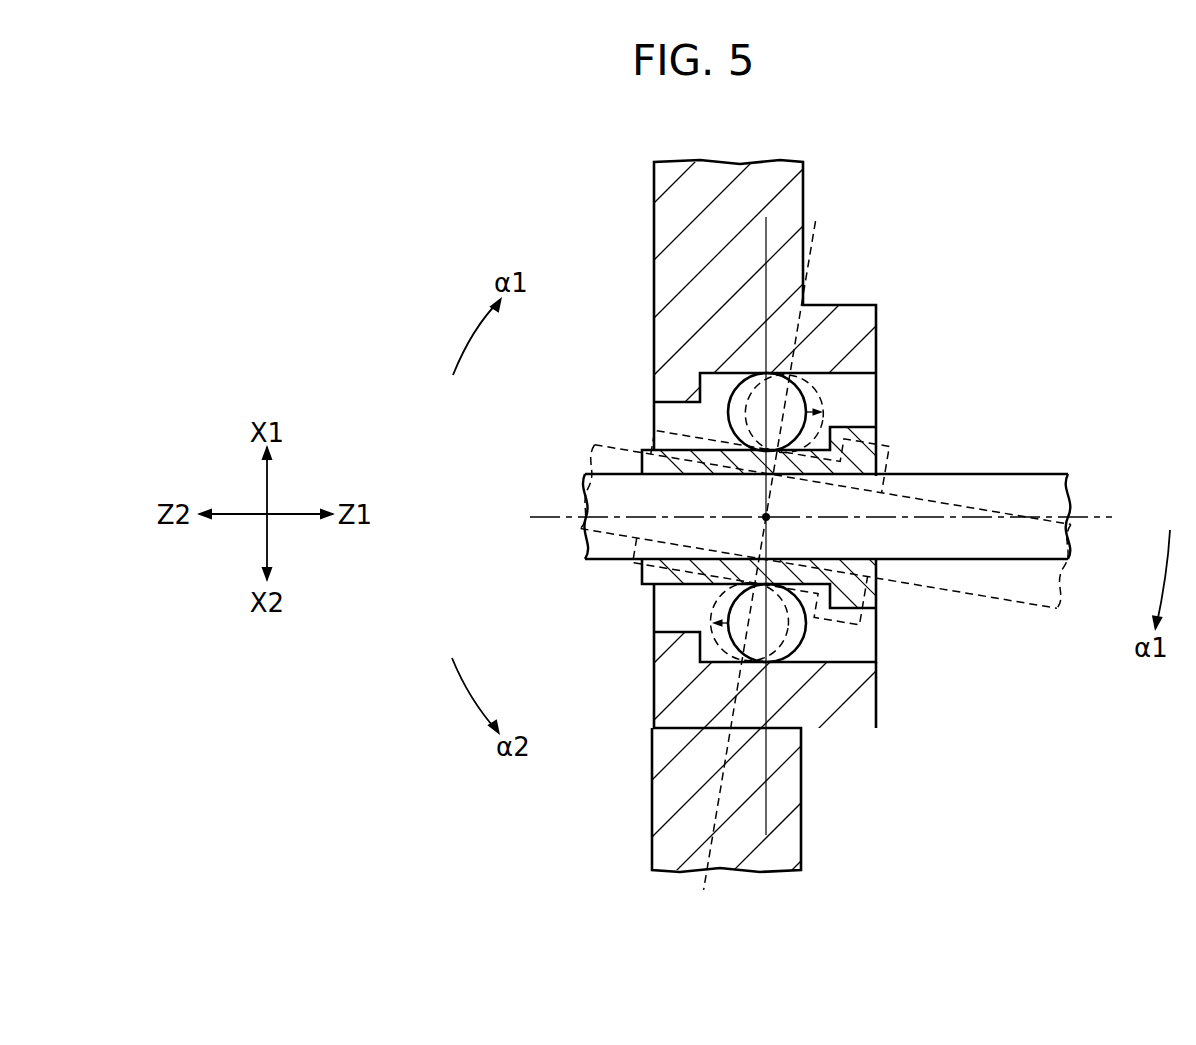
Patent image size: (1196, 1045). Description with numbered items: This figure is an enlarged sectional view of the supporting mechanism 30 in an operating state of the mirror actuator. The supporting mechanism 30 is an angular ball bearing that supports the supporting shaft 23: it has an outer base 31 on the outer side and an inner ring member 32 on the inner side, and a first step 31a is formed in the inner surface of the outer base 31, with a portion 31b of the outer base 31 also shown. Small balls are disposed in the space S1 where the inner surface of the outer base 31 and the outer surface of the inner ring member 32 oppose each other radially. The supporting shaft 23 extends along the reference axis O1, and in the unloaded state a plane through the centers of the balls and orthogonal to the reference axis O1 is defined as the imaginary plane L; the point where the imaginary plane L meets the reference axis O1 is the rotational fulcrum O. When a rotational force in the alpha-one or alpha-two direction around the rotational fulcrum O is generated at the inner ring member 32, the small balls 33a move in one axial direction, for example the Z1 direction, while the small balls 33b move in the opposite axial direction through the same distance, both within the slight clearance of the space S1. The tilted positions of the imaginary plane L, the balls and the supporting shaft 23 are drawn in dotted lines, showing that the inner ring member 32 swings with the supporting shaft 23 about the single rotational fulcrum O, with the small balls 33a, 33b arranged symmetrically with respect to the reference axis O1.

The supporting mechanism 30 is at (905, 294).
The outer base 31 is at (845, 720).
The first step 31a is at (677, 632).
The flange portion of outer ring 31b is at (782, 181).
The inner ring member 32 is at (642, 577).
The small balls 33a is at (795, 382).
The small balls 33b is at (737, 636).
The supporting shaft 23 is at (1037, 560).
The space S1 is at (688, 414).
The rotational fulcrum O is at (766, 517).
The reference axis O1 is at (821, 517).
The imaginary plane L is at (819, 565).